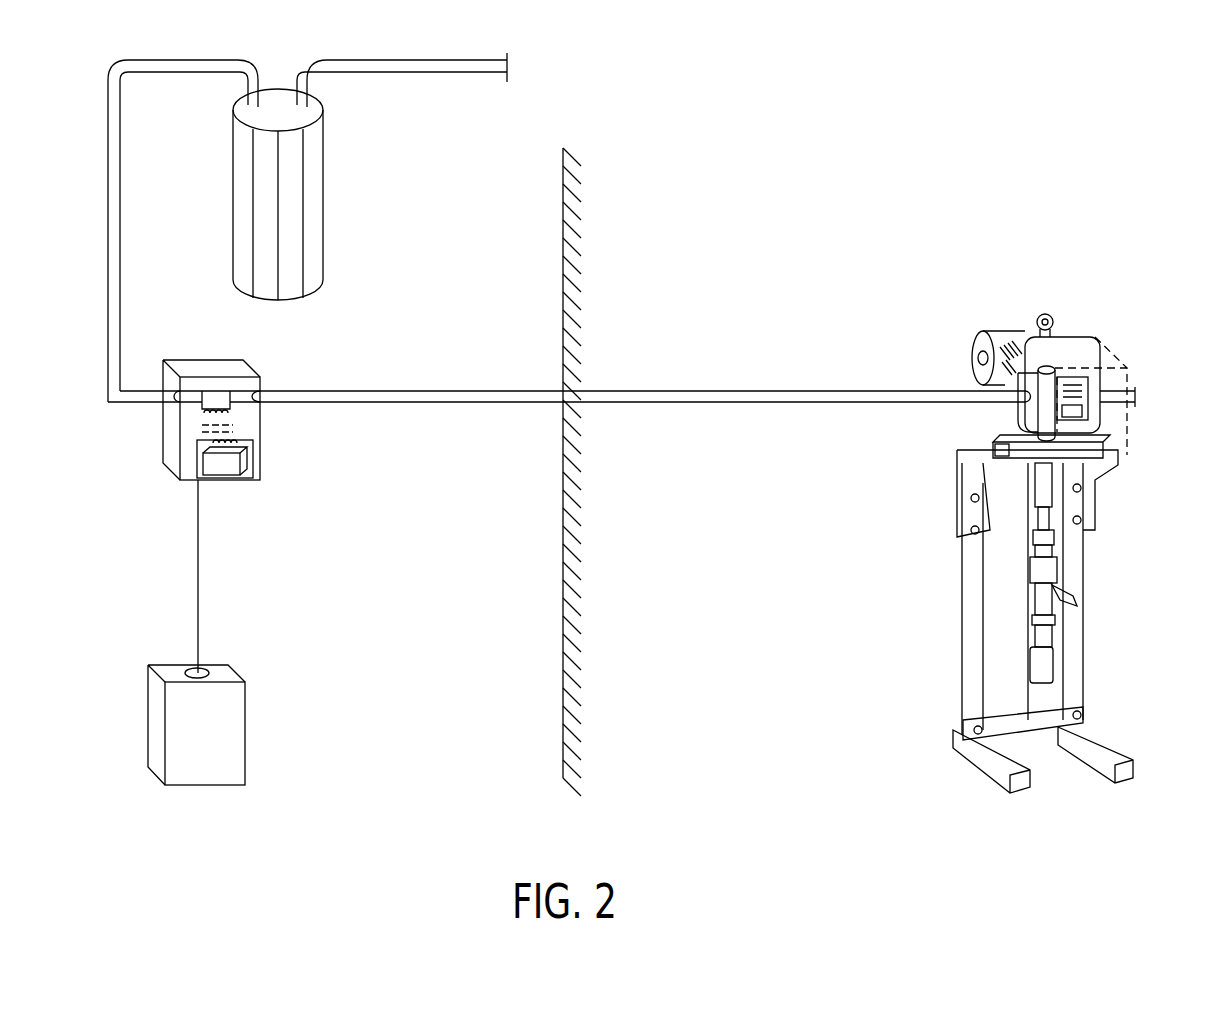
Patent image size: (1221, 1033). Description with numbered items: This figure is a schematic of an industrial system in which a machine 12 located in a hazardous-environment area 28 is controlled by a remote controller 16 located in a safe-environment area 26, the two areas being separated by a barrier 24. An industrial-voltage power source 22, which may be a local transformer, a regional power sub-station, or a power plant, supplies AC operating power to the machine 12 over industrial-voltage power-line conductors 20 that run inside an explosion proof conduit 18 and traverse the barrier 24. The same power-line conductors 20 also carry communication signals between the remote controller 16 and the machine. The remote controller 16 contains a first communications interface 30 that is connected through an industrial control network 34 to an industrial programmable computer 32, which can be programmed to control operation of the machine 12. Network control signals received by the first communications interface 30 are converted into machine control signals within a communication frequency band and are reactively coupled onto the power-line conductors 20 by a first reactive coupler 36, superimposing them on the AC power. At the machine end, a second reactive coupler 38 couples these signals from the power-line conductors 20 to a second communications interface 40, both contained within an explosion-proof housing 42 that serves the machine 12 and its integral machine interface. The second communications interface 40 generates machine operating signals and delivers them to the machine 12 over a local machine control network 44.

The machine 12 is at (1044, 527).
The remote controller 16 is at (202, 466).
The explosion proof conduit 18 is at (636, 388).
The industrial-voltage power-line conductors 20 is at (121, 312).
The industrial-voltage power source 22 is at (324, 257).
The barrier 24 is at (591, 186).
The safe-environment area 26 is at (358, 632).
The hazardous-environment area 28 is at (657, 590).
The first communications interface 30 is at (238, 463).
The industrial programmable computer 32 is at (232, 764).
The industrial control network 34 is at (194, 577).
The first reactive coupler 36 is at (197, 422).
The second reactive coupler 38 is at (1098, 392).
The second communications interface 40 is at (1083, 415).
The explosion-proof housing 42 is at (1060, 335).
The local machine control network 44 is at (993, 415).